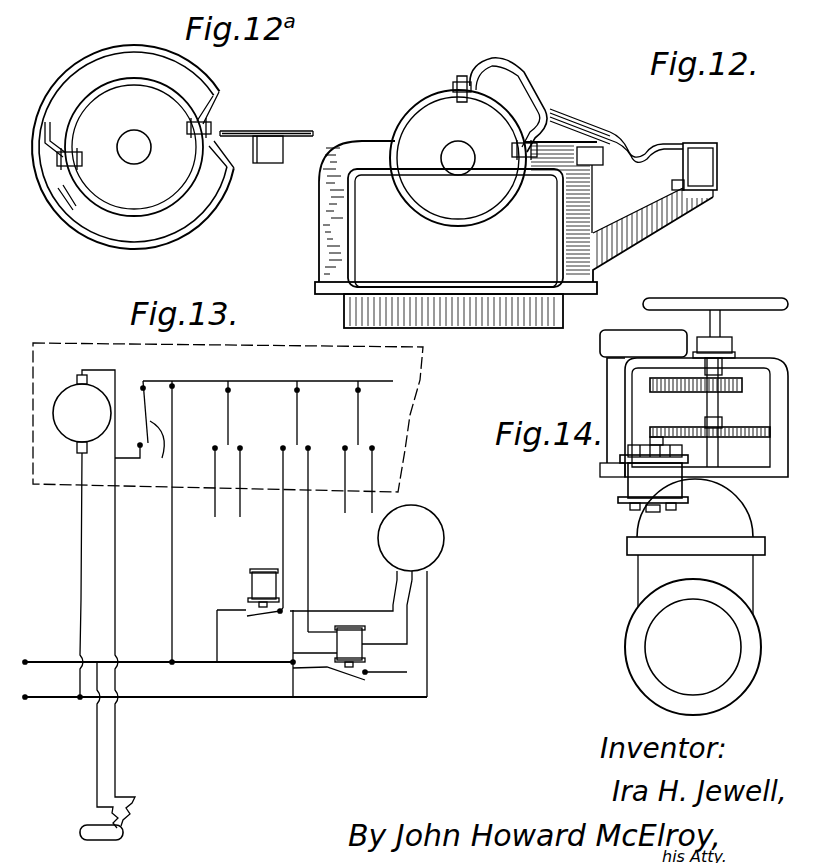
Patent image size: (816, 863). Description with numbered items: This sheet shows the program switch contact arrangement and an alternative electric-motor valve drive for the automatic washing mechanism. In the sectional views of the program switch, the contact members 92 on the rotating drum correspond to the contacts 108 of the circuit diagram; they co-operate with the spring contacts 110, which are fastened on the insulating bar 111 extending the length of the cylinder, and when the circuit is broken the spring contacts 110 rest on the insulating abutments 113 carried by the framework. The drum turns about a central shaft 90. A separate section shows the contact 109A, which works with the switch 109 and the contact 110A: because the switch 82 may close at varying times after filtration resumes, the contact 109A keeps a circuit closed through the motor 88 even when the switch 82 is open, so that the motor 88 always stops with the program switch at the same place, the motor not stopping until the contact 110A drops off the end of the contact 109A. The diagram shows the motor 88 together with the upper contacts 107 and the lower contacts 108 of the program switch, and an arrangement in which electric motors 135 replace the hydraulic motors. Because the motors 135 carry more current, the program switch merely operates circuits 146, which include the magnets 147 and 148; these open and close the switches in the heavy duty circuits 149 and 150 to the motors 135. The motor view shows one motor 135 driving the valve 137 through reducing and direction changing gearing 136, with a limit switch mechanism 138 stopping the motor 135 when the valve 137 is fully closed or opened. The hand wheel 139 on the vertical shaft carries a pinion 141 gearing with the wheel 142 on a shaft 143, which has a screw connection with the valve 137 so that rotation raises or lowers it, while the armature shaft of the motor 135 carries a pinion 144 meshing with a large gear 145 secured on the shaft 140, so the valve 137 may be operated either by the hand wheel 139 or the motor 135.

In FIG. 13, the switch 82 is at (102, 840).
In FIG. 13, the motor 88 is at (72, 393).
In FIG. 12A, the shaft 90 is at (124, 158).
In FIG. 12, the shaft 90 is at (448, 170).
In FIG. 12, the contact members 92 is at (538, 89).
In FIG. 13, the upper contacts 107 is at (297, 427).
In FIG. 13, the contacts 108 is at (283, 450).
In FIG. 13, the switch 109 is at (139, 432).
In FIG. 12A, the contact 109A is at (128, 46).
In FIG. 12, the spring contacts 110 is at (608, 124).
In FIG. 12A, the contact 110A is at (262, 121).
In FIG. 12, the insulating bar 111 is at (700, 165).
In FIG. 12A, the insulating abutments 113 is at (268, 163).
In FIG. 12, the insulating abutments 113 is at (597, 165).
In FIG. 13, the electric motor 135 is at (430, 543).
In FIG. 14, the electric motor 135 is at (637, 482).
In FIG. 14, the reducing and direction changing gearing 136 is at (709, 421).
In FIG. 14, the valve 137 is at (695, 597).
In FIG. 14, the limit switch mechanism 138 is at (643, 343).
In FIG. 14, the hand wheel 139 is at (715, 287).
In FIG. 14, the shaft 140 is at (722, 328).
In FIG. 14, the pinion 141 is at (722, 399).
In FIG. 14, the wheel 142 is at (650, 385).
In FIG. 14, the shaft 143 is at (705, 398).
In FIG. 14, the pinion 144 is at (648, 431).
In FIG. 14, the large gear 145 is at (723, 438).
In FIG. 13, the circuits 146 is at (308, 537).
In FIG. 13, the magnet 147 is at (362, 634).
In FIG. 13, the magnet 148 is at (250, 589).
In FIG. 13, the heavy duty circuit 149 is at (350, 684).
In FIG. 13, the heavy duty circuit 150 is at (218, 632).